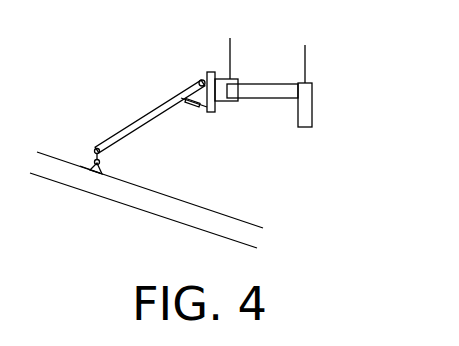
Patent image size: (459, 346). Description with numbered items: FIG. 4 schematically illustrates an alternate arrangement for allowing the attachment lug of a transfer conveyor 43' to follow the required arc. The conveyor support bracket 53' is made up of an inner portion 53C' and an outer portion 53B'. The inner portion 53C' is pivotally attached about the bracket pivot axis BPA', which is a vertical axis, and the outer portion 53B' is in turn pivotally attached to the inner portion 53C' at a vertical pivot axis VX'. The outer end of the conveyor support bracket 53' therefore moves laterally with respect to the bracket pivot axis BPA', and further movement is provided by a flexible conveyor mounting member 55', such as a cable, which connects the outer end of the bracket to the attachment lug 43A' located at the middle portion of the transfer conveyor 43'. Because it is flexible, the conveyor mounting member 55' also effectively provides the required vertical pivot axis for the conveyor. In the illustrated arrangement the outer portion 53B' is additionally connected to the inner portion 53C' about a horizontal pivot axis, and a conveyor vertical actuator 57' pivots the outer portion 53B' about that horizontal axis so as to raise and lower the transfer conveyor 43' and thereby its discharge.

The transfer conveyor 43' is at (156, 200).
The attachment lug 43A' is at (70, 138).
The flexible conveyor mounting member 55' is at (133, 165).
The outer portion 53B' is at (146, 108).
The conveyor vertical actuator 57' is at (201, 127).
The vertical pivot axis VX' is at (201, 41).
The conveyor support bracket 53' is at (246, 114).
The inner portion 53C' is at (262, 49).
The bracket pivot axis BPA' is at (331, 73).